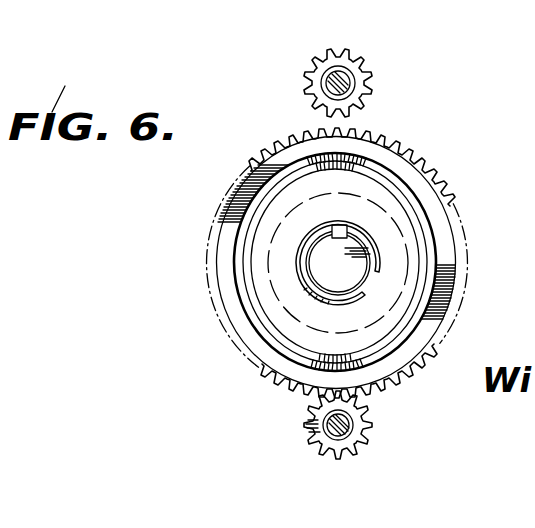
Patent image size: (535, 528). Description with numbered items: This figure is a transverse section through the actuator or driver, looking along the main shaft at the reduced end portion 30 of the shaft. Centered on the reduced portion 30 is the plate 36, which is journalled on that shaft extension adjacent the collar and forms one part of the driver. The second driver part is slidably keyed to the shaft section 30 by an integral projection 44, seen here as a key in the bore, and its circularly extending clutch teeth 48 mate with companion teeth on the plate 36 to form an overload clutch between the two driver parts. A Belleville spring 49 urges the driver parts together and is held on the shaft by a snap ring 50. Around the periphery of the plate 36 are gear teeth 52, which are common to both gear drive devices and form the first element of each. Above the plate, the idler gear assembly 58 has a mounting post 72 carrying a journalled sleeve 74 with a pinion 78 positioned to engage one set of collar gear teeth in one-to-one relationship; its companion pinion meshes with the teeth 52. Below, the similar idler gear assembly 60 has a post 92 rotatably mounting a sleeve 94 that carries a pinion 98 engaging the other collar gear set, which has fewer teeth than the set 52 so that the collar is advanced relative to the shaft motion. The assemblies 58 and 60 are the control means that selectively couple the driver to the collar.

The reduced end portion 30 is at (318, 267).
The plate 36 is at (229, 226).
The integral projection 44 is at (346, 231).
The clutch teeth 48 is at (364, 152).
The Belleville spring 49 is at (416, 238).
The snap ring 50 is at (380, 273).
The peripheral gear teeth 52 is at (398, 148).
The idler gear assembly 58 is at (327, 60).
The idler gear assembly 60 is at (312, 440).
The mounting post 72 is at (350, 80).
The sleeve 74 is at (326, 83).
The pinion 78 is at (362, 62).
The post 92 is at (384, 417).
The sleeve 94 is at (358, 452).
The pinion 98 is at (311, 452).